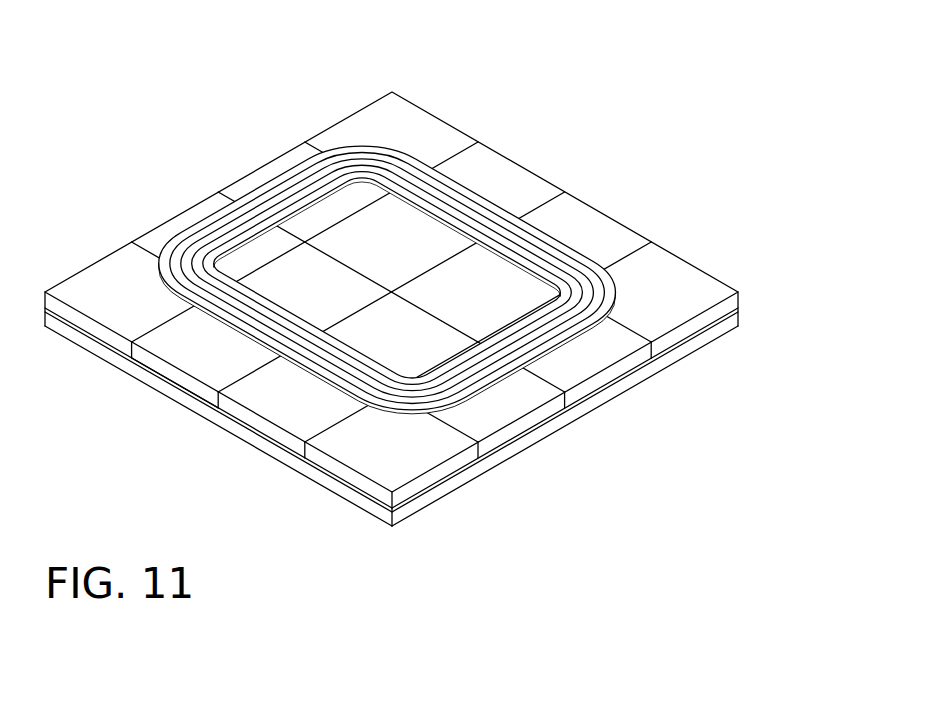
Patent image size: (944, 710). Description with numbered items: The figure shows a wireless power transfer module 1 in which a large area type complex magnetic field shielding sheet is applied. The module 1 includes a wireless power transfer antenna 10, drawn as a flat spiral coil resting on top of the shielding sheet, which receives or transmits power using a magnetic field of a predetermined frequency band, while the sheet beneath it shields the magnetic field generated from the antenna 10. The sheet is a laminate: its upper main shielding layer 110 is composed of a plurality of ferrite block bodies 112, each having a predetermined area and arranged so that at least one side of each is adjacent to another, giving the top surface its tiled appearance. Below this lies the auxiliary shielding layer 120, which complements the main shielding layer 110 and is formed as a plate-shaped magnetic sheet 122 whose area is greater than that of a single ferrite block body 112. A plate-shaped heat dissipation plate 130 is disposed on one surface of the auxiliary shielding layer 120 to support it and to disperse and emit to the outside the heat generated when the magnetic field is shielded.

The wireless power transfer module 1 is at (82, 53).
The wireless power transfer antenna 10 is at (547, 250).
The main shielding layer 110 is at (746, 292).
The ferrite block body 112 is at (493, 172).
The auxiliary shielding layer 120 is at (357, 510).
The plate-shaped magnetic sheet 122 is at (190, 397).
The heat dissipation plate 130 is at (732, 336).